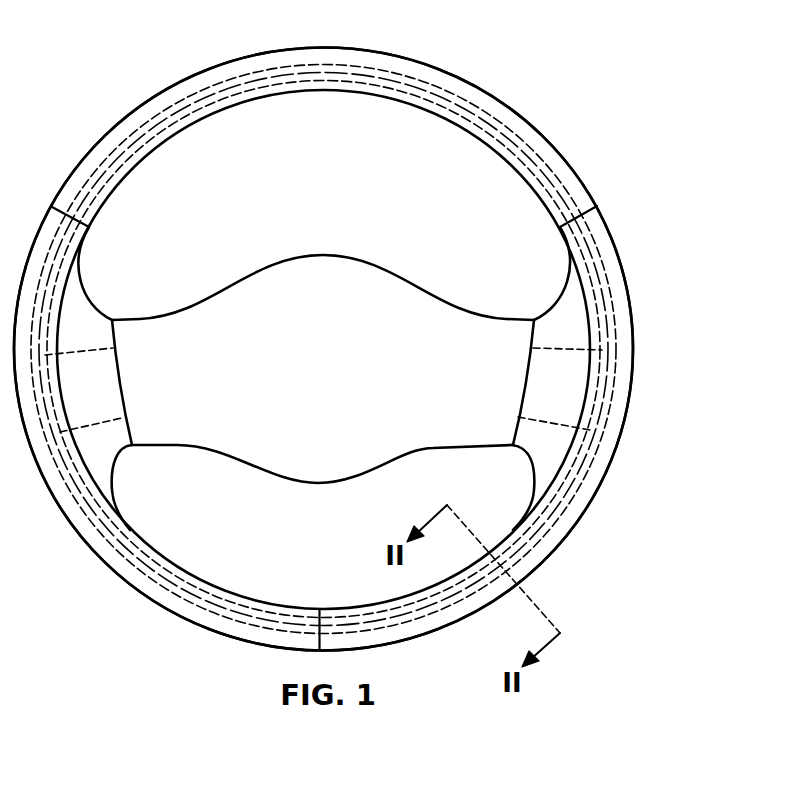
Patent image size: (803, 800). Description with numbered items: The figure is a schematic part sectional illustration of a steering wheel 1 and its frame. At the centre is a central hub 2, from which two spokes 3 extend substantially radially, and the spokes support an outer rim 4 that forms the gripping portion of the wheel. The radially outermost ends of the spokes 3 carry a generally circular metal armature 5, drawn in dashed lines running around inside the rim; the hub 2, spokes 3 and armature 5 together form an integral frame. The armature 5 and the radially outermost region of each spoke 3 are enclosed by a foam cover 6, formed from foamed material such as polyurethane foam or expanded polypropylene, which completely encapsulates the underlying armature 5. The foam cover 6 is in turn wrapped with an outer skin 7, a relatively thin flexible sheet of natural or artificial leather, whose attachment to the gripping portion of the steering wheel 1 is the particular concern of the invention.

The steering wheel 1 is at (113, 41).
The central hub 2 is at (352, 362).
The spokes 3 is at (88, 348).
The outer rim 4 is at (626, 229).
The metal armature 5 is at (620, 333).
The foam cover 6 is at (50, 384).
The outer skin 7 is at (587, 507).